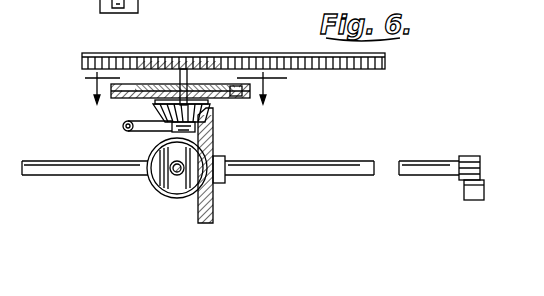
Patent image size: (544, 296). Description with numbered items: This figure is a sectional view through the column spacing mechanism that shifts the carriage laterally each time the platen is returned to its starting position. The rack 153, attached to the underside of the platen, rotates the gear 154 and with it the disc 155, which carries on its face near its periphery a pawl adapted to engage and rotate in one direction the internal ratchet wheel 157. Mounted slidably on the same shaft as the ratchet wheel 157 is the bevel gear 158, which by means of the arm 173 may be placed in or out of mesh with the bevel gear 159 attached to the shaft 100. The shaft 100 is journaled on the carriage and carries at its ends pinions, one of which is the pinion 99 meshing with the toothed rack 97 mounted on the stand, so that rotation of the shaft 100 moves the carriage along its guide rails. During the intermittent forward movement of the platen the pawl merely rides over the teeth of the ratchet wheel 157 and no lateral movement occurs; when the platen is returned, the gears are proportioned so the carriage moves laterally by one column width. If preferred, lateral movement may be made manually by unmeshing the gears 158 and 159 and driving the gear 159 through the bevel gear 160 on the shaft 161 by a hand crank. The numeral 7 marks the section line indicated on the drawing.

The rack 153 is at (348, 70).
The gear 154 is at (222, 72).
The disc 155 is at (145, 83).
The internal ratchet wheel 157 is at (250, 92).
The bevel gear 158 is at (160, 110).
The bevel gear 159 is at (215, 140).
The bevel gear 160 is at (165, 190).
The shaft 161 is at (172, 172).
The arm 173 is at (140, 130).
The shaft 100 is at (317, 177).
The pinion 99 is at (470, 156).
The toothed rack 97 is at (484, 185).
The section line 7 is at (186, 102).